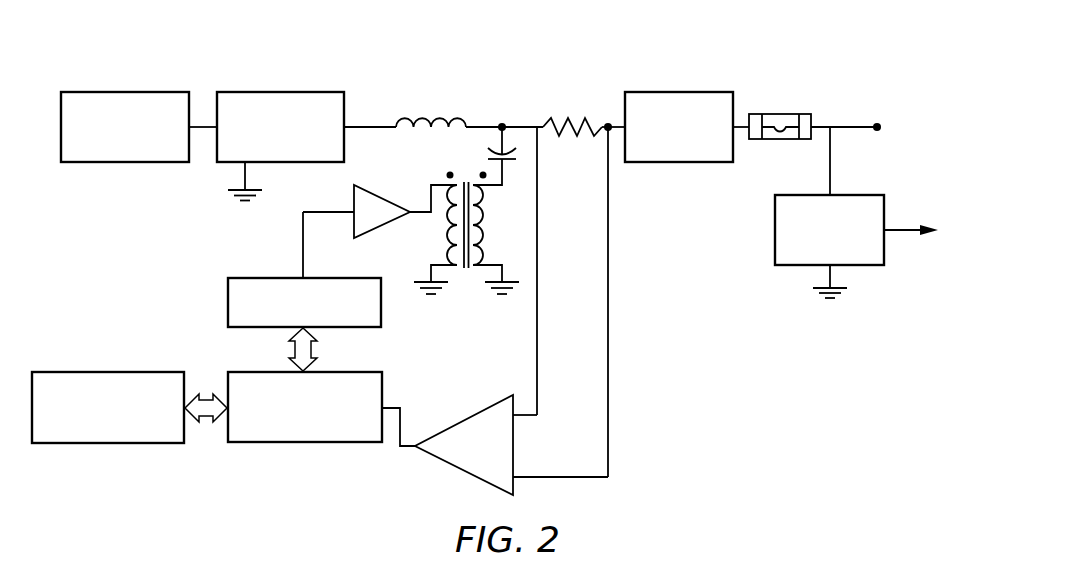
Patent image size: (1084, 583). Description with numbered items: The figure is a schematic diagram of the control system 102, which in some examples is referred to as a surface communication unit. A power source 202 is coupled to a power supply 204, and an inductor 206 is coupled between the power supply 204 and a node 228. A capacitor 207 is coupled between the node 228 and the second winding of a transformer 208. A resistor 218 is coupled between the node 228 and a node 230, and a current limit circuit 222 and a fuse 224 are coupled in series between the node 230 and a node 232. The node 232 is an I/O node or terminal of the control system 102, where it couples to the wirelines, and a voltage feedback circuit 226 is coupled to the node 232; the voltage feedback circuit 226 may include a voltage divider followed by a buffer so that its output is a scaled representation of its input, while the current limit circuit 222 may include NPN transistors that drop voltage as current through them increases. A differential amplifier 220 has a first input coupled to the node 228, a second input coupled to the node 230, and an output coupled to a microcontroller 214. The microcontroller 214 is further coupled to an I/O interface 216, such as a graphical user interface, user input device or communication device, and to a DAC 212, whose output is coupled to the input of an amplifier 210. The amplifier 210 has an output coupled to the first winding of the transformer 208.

The control system 102 is at (111, 16).
The power source 202 is at (127, 162).
The power supply 204 is at (280, 162).
The inductor 206 is at (430, 119).
The capacitor 207 is at (490, 152).
The transformer 208 is at (436, 185).
The amplifier 210 is at (380, 226).
The digital-to-analog converter (DAC) 212 is at (228, 299).
The microcontroller 214 is at (312, 443).
The input/output (I/O) interface 216 is at (117, 443).
The resistor 218 is at (578, 117).
The differential amplifier 220 is at (466, 472).
The current limit circuit 222 is at (708, 163).
The fuse 224 is at (781, 114).
The voltage feedback circuit 226 is at (794, 266).
The node 228 is at (503, 125).
The node 230 is at (609, 131).
The node 232 is at (878, 126).